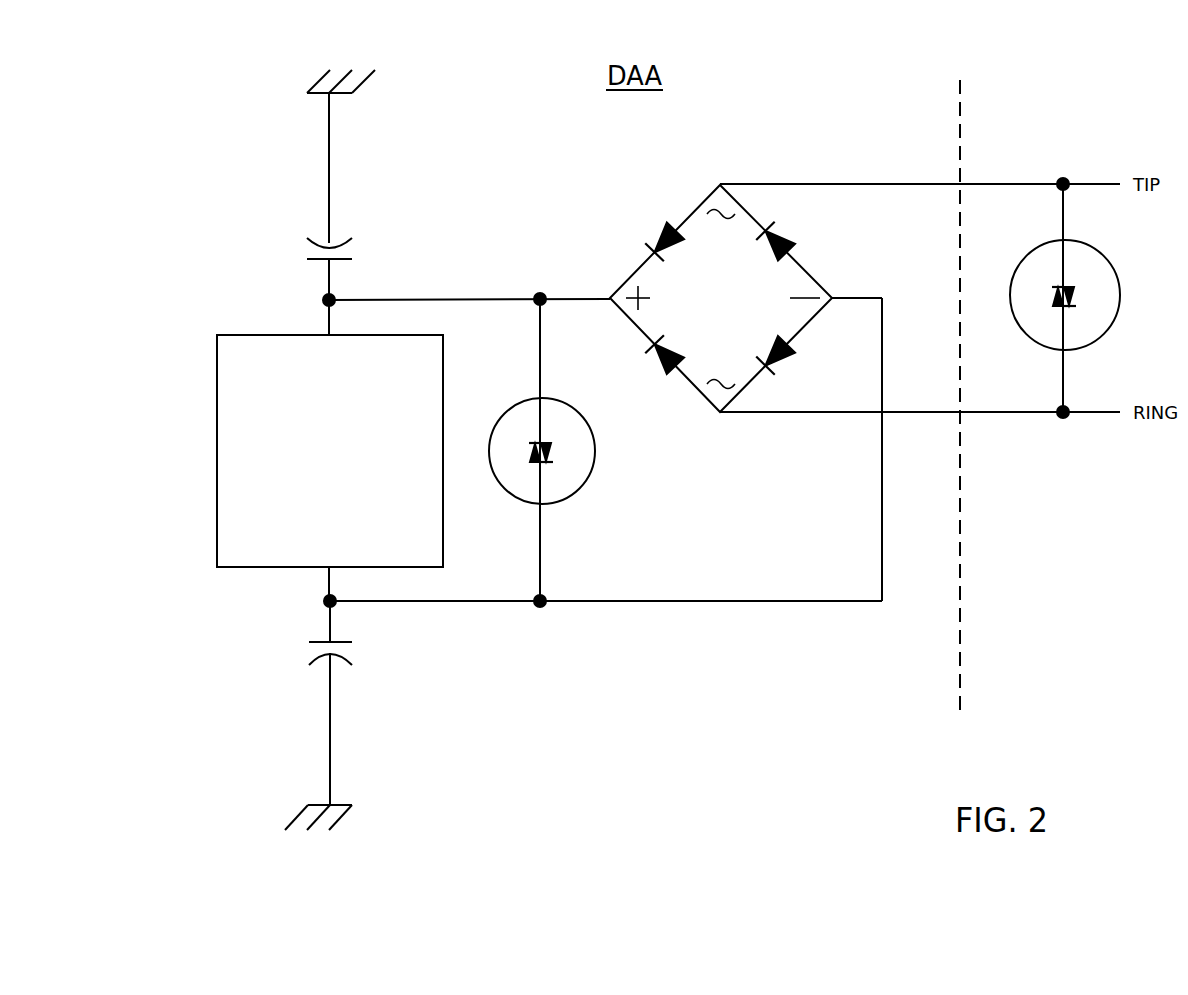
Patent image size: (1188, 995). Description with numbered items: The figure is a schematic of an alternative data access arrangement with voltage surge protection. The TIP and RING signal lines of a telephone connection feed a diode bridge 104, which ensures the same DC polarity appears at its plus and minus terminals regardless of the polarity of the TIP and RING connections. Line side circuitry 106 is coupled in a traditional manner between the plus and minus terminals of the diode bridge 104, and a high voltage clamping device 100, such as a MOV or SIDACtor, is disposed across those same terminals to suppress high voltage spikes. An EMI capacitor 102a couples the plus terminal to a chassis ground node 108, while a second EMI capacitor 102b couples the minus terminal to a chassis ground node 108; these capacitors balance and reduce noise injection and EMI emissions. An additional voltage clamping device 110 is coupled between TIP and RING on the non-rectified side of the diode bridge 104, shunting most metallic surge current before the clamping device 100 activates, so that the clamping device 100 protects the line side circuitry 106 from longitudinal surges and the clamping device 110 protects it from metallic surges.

The high voltage clamping device 100 is at (590, 472).
The EMI capacitor 102a is at (355, 250).
The EMI capacitor 102b is at (358, 652).
The diode bridge 104 is at (739, 304).
The line side circuitry 106 is at (243, 335).
The chassis ground node 108 is at (368, 83).
The additional voltage clamping device 110 is at (1098, 251).